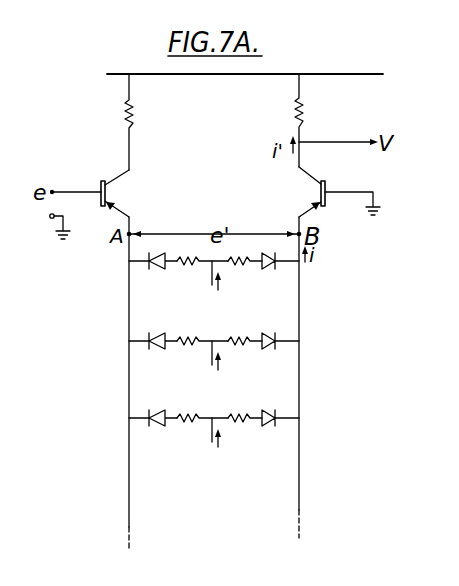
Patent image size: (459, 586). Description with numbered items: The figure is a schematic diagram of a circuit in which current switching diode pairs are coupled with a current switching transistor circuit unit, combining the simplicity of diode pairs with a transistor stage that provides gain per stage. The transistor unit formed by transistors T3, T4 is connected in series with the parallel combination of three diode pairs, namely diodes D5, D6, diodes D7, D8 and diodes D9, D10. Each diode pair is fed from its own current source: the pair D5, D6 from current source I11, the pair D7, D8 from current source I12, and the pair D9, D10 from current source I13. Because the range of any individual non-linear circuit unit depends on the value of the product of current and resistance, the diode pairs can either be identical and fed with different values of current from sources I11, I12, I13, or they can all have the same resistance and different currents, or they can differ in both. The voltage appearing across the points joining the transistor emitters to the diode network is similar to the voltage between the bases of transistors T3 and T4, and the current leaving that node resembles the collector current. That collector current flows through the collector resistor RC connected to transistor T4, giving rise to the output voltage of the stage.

The transistor T3 is at (93, 193).
The transistor T4 is at (332, 192).
The collector resistor RC is at (314, 120).
The diode D5 is at (153, 275).
The diode D6 is at (280, 275).
The diode D7 is at (153, 355).
The diode D8 is at (279, 355).
The diode D9 is at (153, 433).
The diode D10 is at (279, 433).
The current source I11 is at (233, 286).
The current source I12 is at (233, 366).
The current source I13 is at (232, 444).